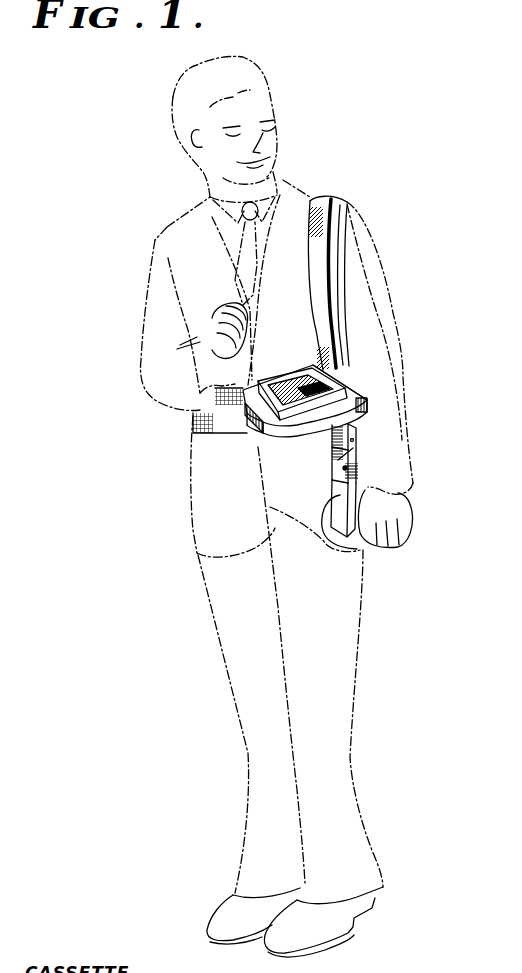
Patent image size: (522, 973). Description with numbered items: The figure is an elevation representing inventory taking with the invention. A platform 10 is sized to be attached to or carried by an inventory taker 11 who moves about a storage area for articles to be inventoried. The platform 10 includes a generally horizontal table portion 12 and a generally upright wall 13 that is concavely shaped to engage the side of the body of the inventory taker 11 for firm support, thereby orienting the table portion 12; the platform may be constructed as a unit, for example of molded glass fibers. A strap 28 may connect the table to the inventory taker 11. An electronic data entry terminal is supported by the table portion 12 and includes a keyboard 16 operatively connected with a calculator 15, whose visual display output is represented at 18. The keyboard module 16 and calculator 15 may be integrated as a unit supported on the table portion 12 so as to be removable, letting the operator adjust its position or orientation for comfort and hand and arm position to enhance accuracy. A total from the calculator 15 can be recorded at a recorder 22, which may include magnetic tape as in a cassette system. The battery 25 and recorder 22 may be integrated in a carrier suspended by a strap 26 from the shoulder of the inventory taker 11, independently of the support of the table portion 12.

The platform 10 is at (294, 442).
The inventory taker 11 is at (138, 286).
The table portion 12 is at (375, 418).
The upright wall 13 is at (250, 438).
The calculator 15 is at (362, 392).
The keyboard 16 is at (289, 357).
The visual display output 18 is at (347, 367).
The recorder 22 is at (337, 487).
The battery 25 is at (337, 507).
The strap 26 is at (315, 255).
The strap 28 is at (192, 420).